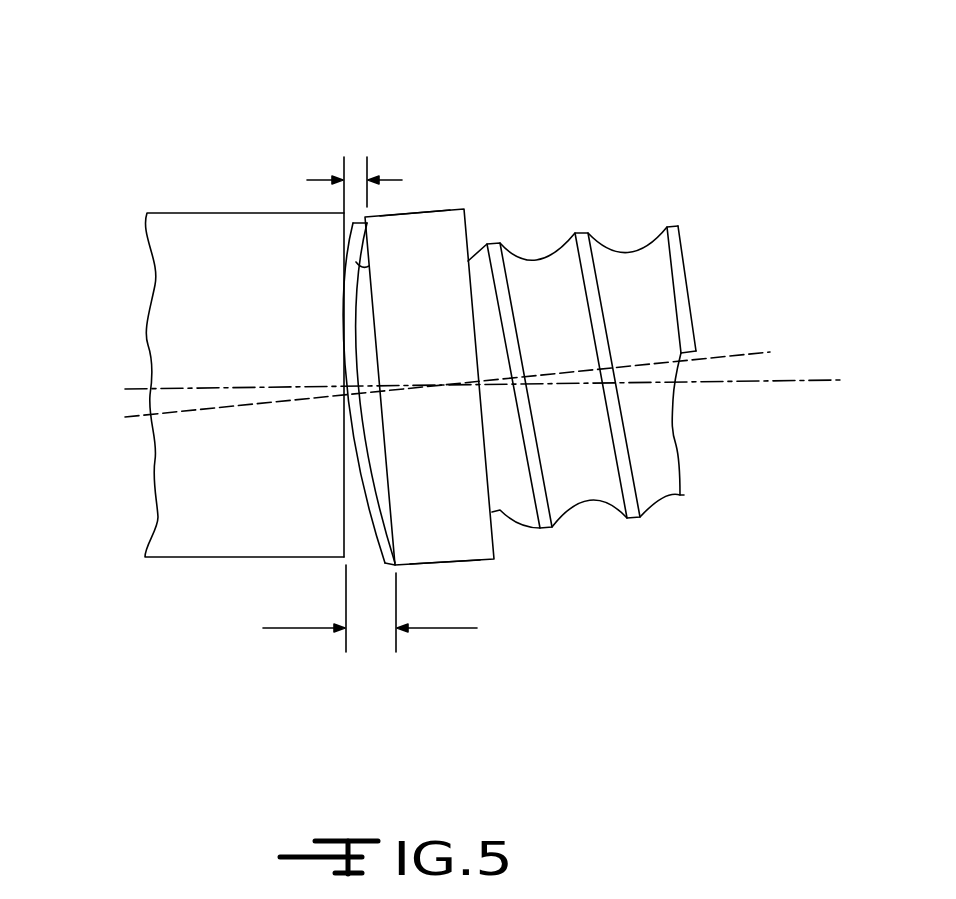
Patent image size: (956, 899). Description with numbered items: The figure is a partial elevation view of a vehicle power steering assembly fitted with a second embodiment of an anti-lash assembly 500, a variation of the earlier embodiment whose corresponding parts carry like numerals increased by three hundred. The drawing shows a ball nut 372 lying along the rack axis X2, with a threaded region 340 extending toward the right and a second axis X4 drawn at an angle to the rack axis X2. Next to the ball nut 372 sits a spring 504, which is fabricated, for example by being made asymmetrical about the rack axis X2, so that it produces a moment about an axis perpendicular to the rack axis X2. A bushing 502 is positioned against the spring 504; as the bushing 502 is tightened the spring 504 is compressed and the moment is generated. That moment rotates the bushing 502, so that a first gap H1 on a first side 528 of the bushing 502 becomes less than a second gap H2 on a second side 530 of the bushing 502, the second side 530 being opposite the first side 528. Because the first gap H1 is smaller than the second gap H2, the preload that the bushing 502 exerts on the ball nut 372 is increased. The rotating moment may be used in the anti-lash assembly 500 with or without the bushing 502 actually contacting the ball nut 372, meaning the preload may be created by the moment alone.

The threaded portion 340 is at (544, 240).
The ball nut 372 is at (408, 354).
The anti-lash assembly 500 is at (415, 578).
The bushing 502 is at (511, 320).
The spring 504 is at (368, 485).
The first side 528 is at (397, 213).
The second side 530 is at (464, 561).
The first gap H1 is at (352, 180).
The second gap H2 is at (372, 632).
The rack axis X2 is at (772, 380).
The fourth axis X4 is at (728, 352).